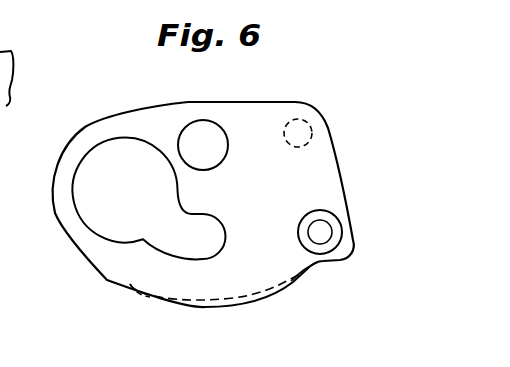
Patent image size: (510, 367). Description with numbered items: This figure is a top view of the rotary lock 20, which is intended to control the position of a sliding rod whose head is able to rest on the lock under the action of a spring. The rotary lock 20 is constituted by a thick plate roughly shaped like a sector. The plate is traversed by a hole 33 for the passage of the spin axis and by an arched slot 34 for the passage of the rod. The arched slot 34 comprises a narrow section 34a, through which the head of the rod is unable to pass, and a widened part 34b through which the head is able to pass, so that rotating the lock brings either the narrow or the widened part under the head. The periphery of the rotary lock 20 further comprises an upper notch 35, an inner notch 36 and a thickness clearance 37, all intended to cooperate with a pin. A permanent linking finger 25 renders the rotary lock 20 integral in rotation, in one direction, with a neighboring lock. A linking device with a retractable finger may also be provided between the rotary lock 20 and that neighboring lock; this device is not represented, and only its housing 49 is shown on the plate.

The rotary lock 20 is at (318, 162).
The permanent linking finger 25 is at (303, 118).
The hole 33 is at (214, 123).
The arched slot 34 is at (143, 242).
The narrow section 34a is at (190, 244).
The widened part 34b is at (88, 188).
The upper notch 35 is at (309, 270).
The inner notch 36 is at (141, 293).
The thickness clearance 37 is at (240, 300).
The housing 49 is at (330, 222).